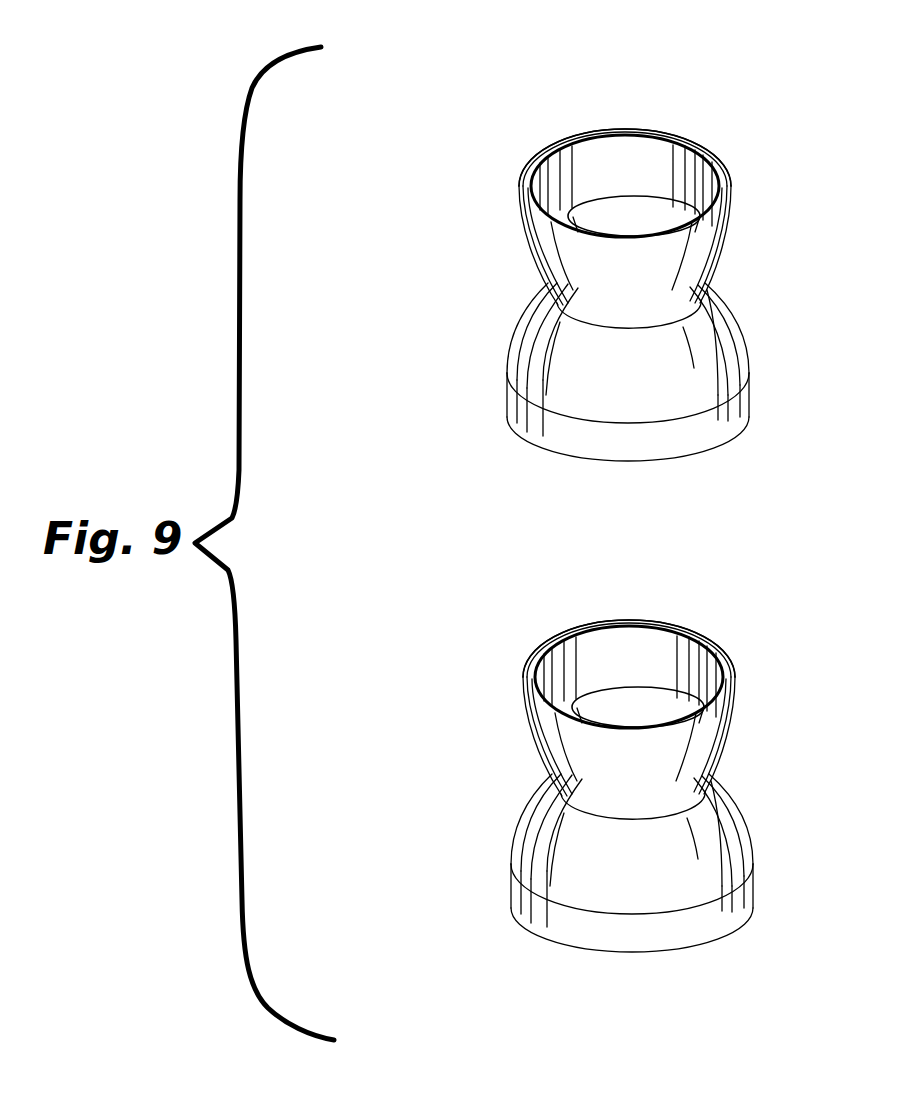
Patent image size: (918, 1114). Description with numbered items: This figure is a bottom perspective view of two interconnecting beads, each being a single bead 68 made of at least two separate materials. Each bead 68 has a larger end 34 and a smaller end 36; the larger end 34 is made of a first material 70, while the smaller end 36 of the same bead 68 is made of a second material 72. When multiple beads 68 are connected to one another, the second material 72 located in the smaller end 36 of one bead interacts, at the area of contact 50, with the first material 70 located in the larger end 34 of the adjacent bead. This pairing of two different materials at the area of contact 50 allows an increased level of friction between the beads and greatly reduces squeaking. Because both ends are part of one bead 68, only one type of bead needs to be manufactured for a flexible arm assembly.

The larger end 34 is at (578, 358).
The smaller end 36 is at (572, 242).
The area of contact 50 is at (737, 175).
The bead 68 is at (605, 491).
The first material 70 is at (563, 428).
The second material 72 is at (528, 192).